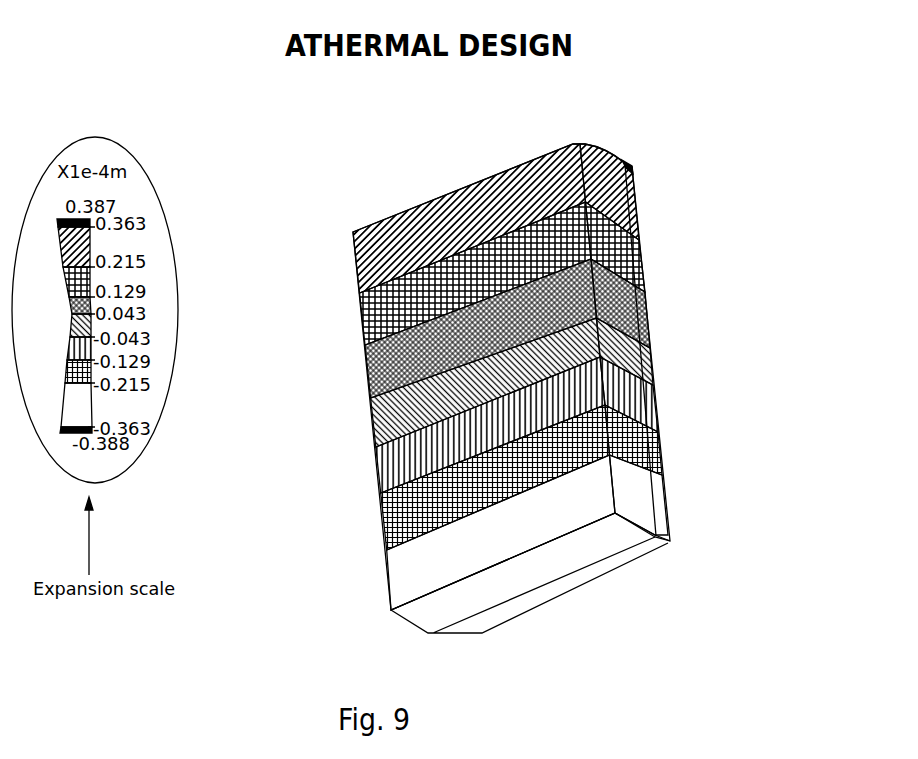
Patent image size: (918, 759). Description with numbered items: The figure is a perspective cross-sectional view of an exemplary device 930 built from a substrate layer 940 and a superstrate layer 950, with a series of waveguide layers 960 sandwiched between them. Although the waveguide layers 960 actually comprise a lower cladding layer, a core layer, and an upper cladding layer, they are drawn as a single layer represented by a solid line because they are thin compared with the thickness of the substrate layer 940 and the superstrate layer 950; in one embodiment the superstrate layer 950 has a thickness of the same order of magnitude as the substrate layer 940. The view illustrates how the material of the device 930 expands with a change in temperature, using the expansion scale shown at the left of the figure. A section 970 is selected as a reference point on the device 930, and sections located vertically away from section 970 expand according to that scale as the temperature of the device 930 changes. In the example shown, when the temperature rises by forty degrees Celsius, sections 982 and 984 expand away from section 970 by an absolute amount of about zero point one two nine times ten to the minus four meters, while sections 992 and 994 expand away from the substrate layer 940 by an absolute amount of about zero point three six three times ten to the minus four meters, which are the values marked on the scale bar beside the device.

The device 930 is at (672, 161).
The substrate layer 940 is at (640, 213).
The superstrate layer 950 is at (623, 393).
The waveguide layers 960 is at (631, 558).
The section 994 is at (354, 237).
The section 984 is at (365, 347).
The section 970 is at (371, 400).
The section 982 is at (376, 448).
The section 992 is at (387, 551).